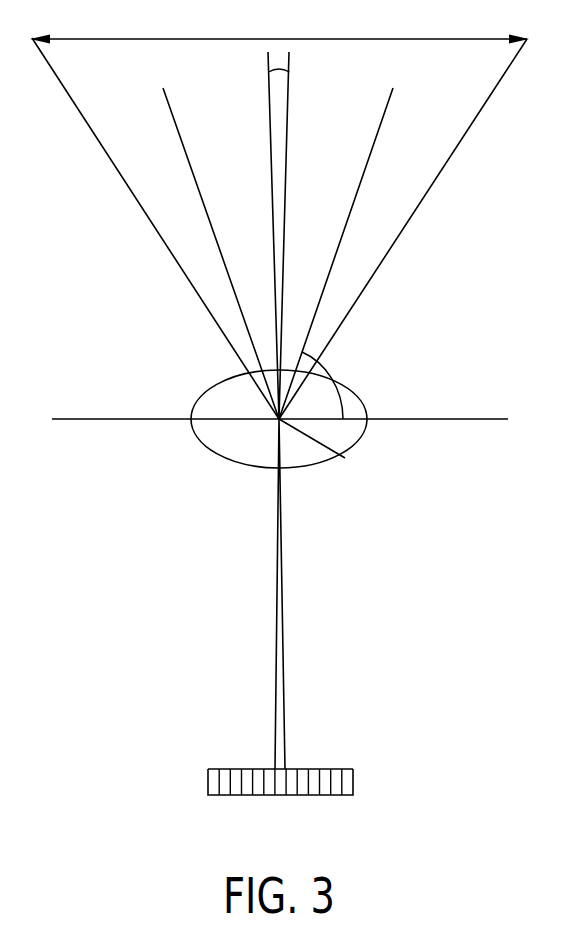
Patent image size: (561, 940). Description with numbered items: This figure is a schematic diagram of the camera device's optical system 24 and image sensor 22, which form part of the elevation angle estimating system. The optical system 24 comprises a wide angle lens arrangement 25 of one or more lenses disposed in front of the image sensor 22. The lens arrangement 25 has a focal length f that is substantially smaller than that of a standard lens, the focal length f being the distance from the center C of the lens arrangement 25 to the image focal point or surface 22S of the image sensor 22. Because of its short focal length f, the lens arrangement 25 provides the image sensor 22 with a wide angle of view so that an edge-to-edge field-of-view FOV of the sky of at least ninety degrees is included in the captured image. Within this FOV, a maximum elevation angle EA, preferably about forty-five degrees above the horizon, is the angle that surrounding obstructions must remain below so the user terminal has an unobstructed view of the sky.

The image sensor 22 is at (353, 769).
The image focal surface of the image sensor 22S is at (323, 768).
The optical system 24 is at (168, 391).
The wide angle lens arrangement 25 is at (200, 397).
The focal length f is at (277, 623).
The field-of-view FOV is at (428, 42).
The maximum elevation angle EA is at (327, 365).
The center of the lens arrangement C is at (345, 458).